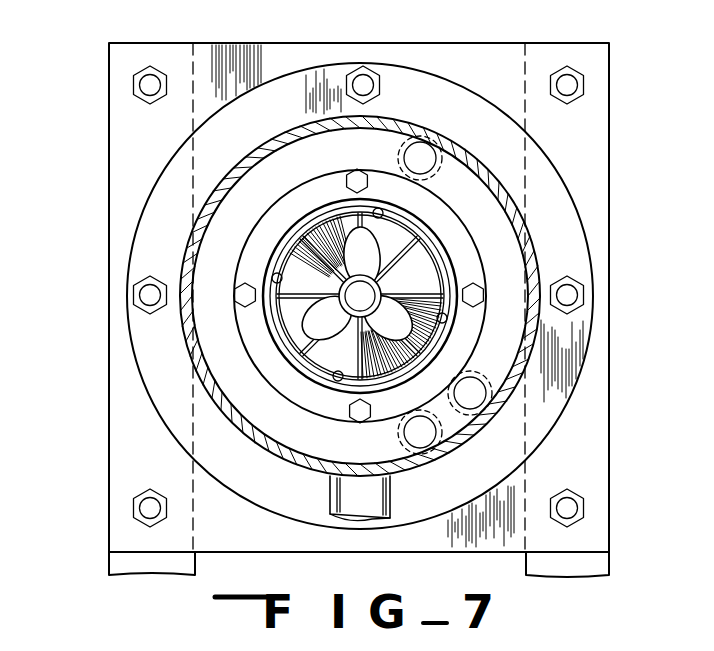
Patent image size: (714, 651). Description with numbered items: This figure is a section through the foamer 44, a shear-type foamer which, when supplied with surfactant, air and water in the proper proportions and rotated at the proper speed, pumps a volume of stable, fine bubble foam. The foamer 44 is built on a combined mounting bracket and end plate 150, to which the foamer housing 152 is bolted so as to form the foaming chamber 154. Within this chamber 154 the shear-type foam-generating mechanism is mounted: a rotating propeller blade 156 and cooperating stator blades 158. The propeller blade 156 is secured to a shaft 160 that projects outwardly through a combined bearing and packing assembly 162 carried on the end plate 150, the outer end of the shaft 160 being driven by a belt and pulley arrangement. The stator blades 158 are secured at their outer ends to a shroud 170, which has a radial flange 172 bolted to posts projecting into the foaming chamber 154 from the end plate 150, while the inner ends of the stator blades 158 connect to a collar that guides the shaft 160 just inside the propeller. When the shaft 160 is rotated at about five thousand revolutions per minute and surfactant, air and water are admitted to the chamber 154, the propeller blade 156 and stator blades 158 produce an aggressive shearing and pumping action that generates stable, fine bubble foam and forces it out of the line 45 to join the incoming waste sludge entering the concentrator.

The combined mounting bracket and end plate 150 is at (118, 157).
The foamer 44 is at (551, 224).
The foamer housing 152 is at (372, 122).
The chamber 154 is at (378, 146).
The propeller blade 156 is at (342, 215).
The stator blades 158 is at (418, 245).
The shaft 160 is at (346, 289).
The combined bearing and packing assembly 162 is at (345, 258).
The shroud 170 is at (268, 331).
The radial flange 172 is at (262, 367).
The line 45 is at (330, 489).